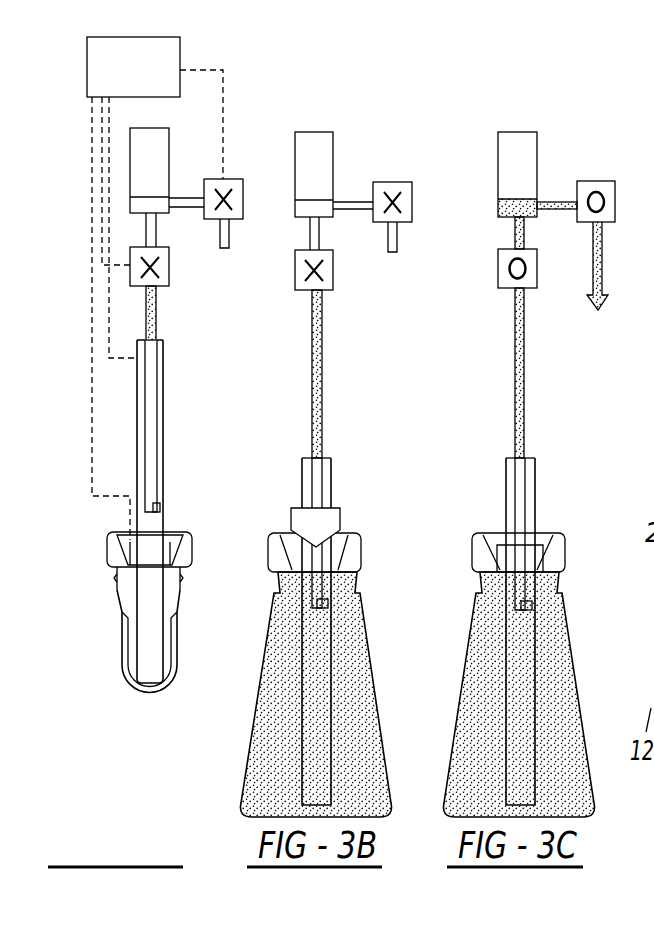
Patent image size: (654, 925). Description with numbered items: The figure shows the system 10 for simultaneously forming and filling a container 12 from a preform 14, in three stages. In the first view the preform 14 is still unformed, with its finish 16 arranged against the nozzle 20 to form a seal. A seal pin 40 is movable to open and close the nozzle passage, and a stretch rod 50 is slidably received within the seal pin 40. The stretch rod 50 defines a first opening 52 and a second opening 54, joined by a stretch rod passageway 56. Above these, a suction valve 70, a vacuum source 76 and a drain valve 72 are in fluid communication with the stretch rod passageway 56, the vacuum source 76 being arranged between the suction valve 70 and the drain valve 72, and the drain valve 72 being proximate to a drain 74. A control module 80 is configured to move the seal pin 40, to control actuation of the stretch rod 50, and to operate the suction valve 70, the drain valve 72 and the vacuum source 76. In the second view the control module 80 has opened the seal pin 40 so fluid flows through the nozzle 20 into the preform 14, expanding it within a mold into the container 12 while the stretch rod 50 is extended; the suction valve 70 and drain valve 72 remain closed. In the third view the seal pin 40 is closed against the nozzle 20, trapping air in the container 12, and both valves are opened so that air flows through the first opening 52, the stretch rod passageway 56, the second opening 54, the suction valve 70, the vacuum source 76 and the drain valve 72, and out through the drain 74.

In FIG. 3A, the system 10 is at (71, 82).
In FIG. 3A, the control module 80 is at (180, 47).
In FIG. 3A, the vacuum source 76 is at (163, 165).
In FIG. 3B, the vacuum source 76 is at (329, 169).
In FIG. 3C, the vacuum source 76 is at (534, 169).
In FIG. 3A, the drain valve 72 is at (243, 205).
In FIG. 3B, the drain valve 72 is at (412, 207).
In FIG. 3C, the drain valve 72 is at (615, 207).
In FIG. 3A, the drain 74 is at (229, 242).
In FIG. 3B, the drain 74 is at (400, 237).
In FIG. 3C, the drain 74 is at (603, 250).
In FIG. 3A, the suction valve 70 is at (169, 268).
In FIG. 3B, the suction valve 70 is at (333, 273).
In FIG. 3C, the suction valve 70 is at (537, 272).
In FIG. 3A, the second opening 54 is at (152, 339).
In FIG. 3B, the second opening 54 is at (320, 458).
In FIG. 3C, the second opening 54 is at (525, 453).
In FIG. 3A, the stretch rod passageway 56 is at (150, 390).
In FIG. 3B, the stretch rod passageway 56 is at (318, 473).
In FIG. 3C, the stretch rod passageway 56 is at (518, 482).
In FIG. 3A, the stretch rod 50 is at (163, 432).
In FIG. 3B, the stretch rod 50 is at (332, 497).
In FIG. 3C, the stretch rod 50 is at (535, 505).
In FIG. 3A, the first opening 52 is at (161, 507).
In FIG. 3B, the first opening 52 is at (327, 603).
In FIG. 3C, the first opening 52 is at (530, 603).
In FIG. 3A, the seal pin 40 is at (130, 550).
In FIG. 3B, the seal pin 40 is at (325, 518).
In FIG. 3C, the seal pin 40 is at (533, 555).
In FIG. 3A, the nozzle 20 is at (112, 557).
In FIG. 3B, the nozzle 20 is at (280, 553).
In FIG. 3C, the nozzle 20 is at (483, 555).
In FIG. 3A, the finish 16 is at (116, 578).
In FIG. 3A, the preform 14 is at (122, 625).
In FIG. 3B, the container 12 is at (262, 702).
In FIG. 3C, the container 12 is at (462, 690).